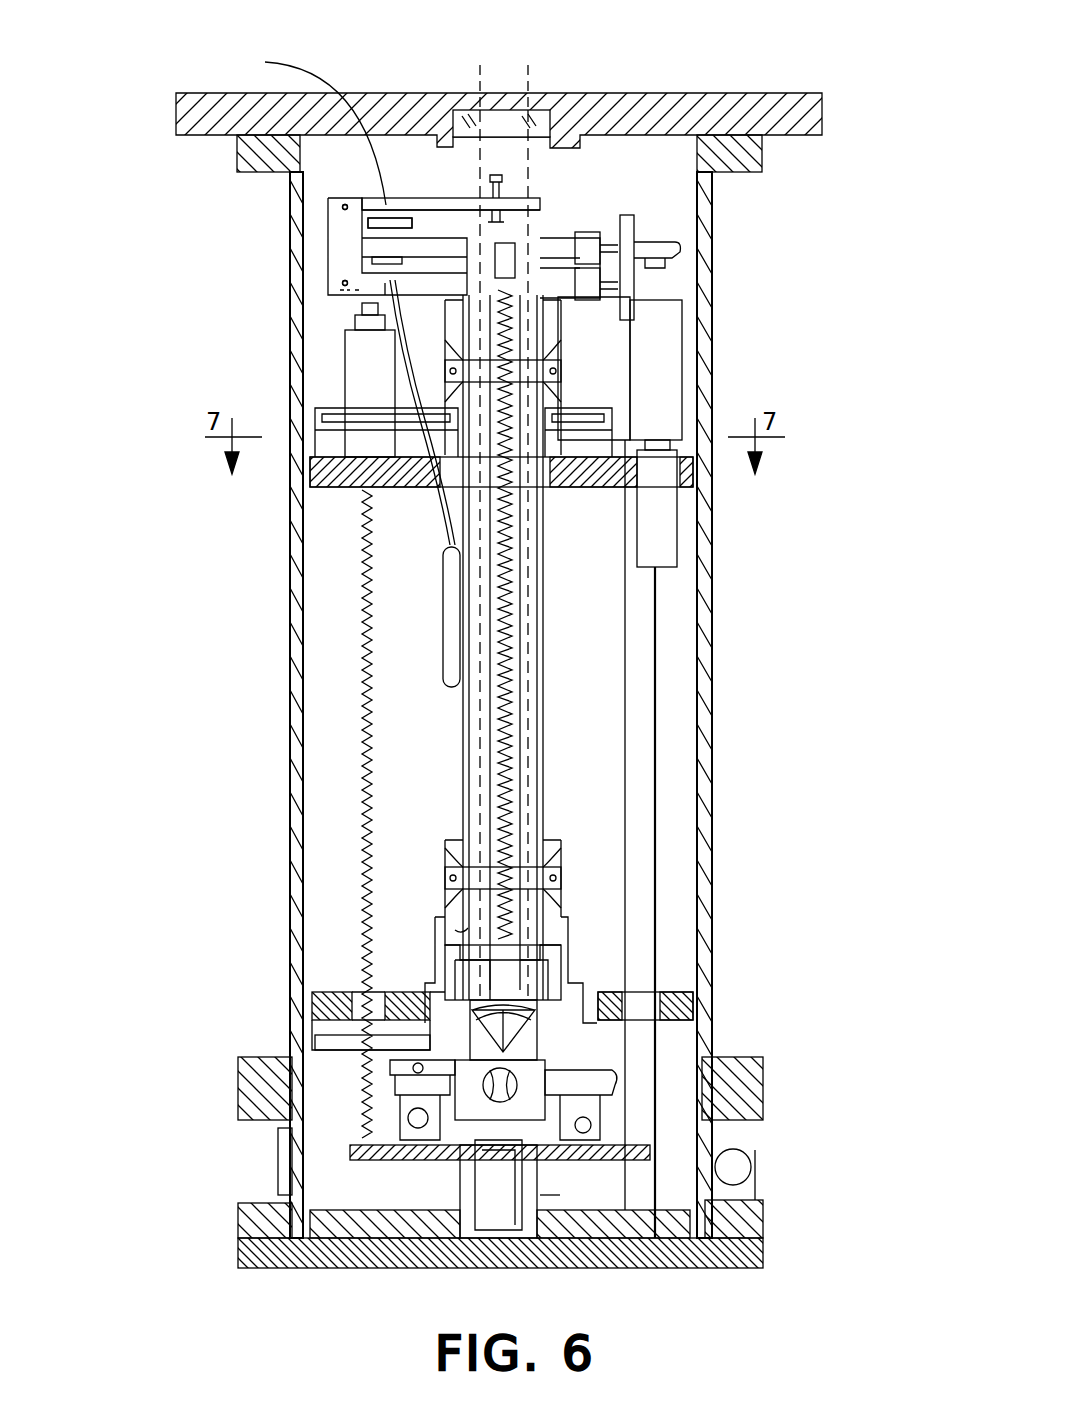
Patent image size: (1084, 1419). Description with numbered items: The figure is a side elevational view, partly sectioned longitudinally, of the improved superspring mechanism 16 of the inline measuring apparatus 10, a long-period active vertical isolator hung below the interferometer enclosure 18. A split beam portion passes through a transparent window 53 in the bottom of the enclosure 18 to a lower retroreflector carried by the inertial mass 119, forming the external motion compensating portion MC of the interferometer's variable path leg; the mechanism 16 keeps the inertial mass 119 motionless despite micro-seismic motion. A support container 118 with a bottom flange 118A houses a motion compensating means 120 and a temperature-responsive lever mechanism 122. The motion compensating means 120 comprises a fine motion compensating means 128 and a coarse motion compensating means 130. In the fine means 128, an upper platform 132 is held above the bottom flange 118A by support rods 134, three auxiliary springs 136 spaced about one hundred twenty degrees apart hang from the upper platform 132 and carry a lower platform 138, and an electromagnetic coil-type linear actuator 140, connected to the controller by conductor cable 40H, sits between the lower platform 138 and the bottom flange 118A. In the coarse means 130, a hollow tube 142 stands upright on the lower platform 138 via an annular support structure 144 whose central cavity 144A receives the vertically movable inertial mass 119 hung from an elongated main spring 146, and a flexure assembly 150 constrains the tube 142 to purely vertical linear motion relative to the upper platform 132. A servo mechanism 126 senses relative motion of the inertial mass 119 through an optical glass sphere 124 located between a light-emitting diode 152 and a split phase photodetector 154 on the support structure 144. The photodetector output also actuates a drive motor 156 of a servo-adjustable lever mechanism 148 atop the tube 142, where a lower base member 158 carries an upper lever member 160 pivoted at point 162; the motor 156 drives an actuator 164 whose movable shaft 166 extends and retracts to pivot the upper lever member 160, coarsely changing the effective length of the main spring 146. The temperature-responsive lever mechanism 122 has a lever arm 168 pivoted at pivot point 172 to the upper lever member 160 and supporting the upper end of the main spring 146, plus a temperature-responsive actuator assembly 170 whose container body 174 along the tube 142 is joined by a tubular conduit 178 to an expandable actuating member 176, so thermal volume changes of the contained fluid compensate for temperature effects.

The inline measuring apparatus 10 is at (842, 22).
The superspring mechanism 16 is at (810, 322).
The interferometer enclosure 18 is at (822, 114).
The transparent window 53 is at (535, 112).
The support container 118 is at (712, 606).
The bottom flange 118A is at (715, 1262).
The inertial mass 119 is at (552, 968).
The motion compensating means 120 is at (326, 658).
The temperature-responsive lever mechanism 122 is at (322, 237).
The optical glass sphere 124 is at (484, 1112).
The servo mechanism 126 is at (366, 1122).
The fine motion compensating means 128 is at (345, 1160).
The coarse motion compensating means 130 is at (578, 366).
The upper platform 132 is at (315, 470).
The support rods 134 is at (658, 786).
The auxiliary springs 136 is at (366, 778).
The lower platform 138 is at (652, 1146).
The electromagnetic coil-type linear actuator 140 is at (478, 1222).
The hollow tube 142 is at (545, 592).
The annular support structure 144 is at (572, 915).
The central cavity 144A is at (464, 935).
The main spring 146 is at (512, 782).
The servo-adjustable lever mechanism 148 is at (325, 308).
The flexure assembly 150 is at (418, 406).
The light-emitting diode 152 is at (612, 1080).
The split phase photodetector 154 is at (425, 1068).
The drive motor 156 is at (680, 546).
The lower base member 158 is at (568, 300).
The upper lever member 160 is at (560, 243).
The pivot point 162 is at (342, 283).
The actuator 164 is at (676, 326).
The movable shaft 166 is at (680, 246).
The lever arm 168 is at (430, 200).
The temperature-responsive actuator assembly 170 is at (382, 206).
The pivot point 172 is at (342, 207).
The container body 174 is at (447, 622).
The actuating member 176 is at (268, 62).
The tubular conduit 178 is at (428, 508).
The conductor cable 40H is at (545, 1198).
The external motion compensating portion MC is at (485, 655).